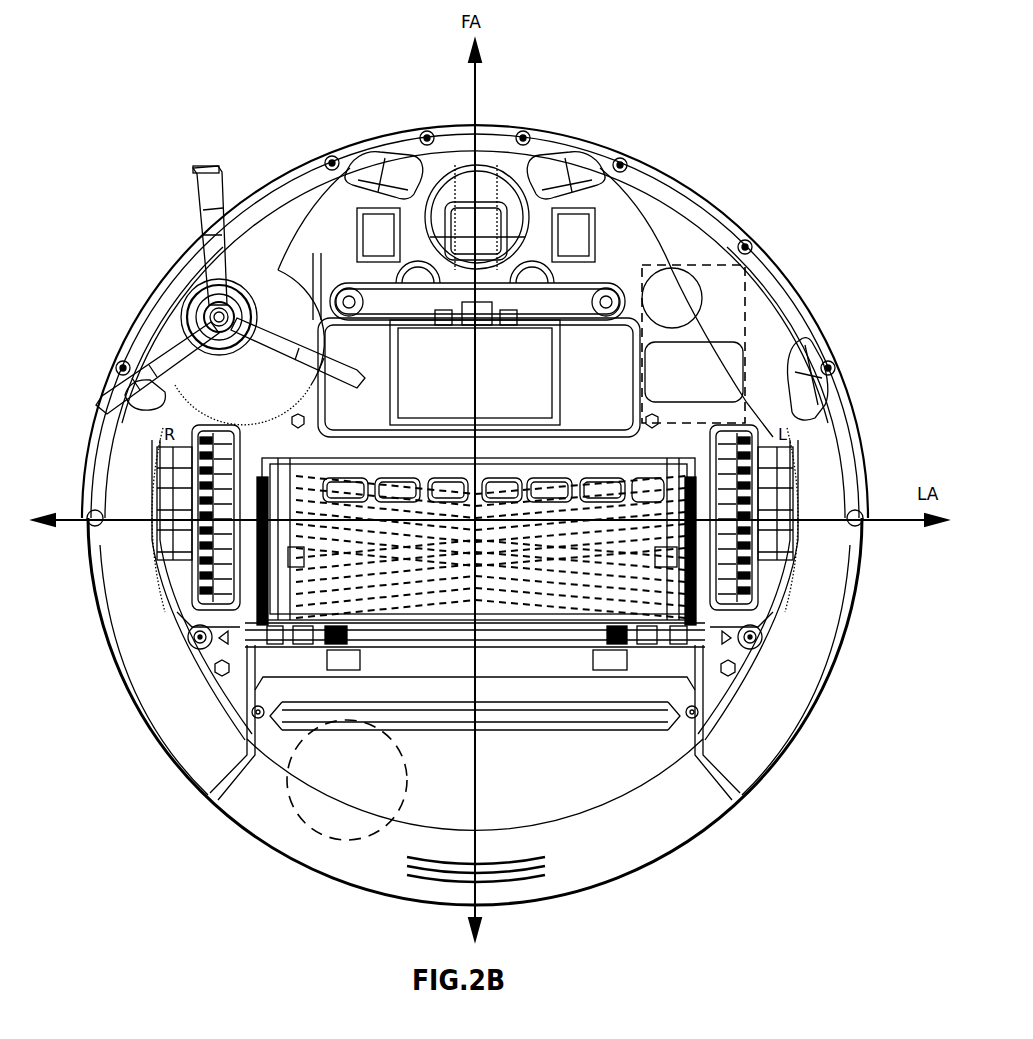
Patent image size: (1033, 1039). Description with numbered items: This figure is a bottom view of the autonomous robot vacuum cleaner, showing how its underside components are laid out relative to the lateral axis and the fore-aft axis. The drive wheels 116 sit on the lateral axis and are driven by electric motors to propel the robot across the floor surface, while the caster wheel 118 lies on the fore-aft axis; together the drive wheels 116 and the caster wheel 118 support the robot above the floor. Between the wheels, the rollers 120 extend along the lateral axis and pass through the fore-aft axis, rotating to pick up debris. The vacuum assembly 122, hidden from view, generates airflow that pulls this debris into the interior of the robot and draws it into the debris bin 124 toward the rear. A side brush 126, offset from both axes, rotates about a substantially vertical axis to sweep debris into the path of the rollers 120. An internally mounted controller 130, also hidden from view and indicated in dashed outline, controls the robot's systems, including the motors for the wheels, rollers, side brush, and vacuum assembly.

The drive wheels 116 is at (217, 473).
The caster wheel 118 is at (470, 236).
The rollers 120 is at (322, 497).
The vacuum assembly 122 is at (320, 833).
The debris bin 124 is at (564, 786).
The side brush 126 is at (207, 183).
The controller 130 is at (747, 272).